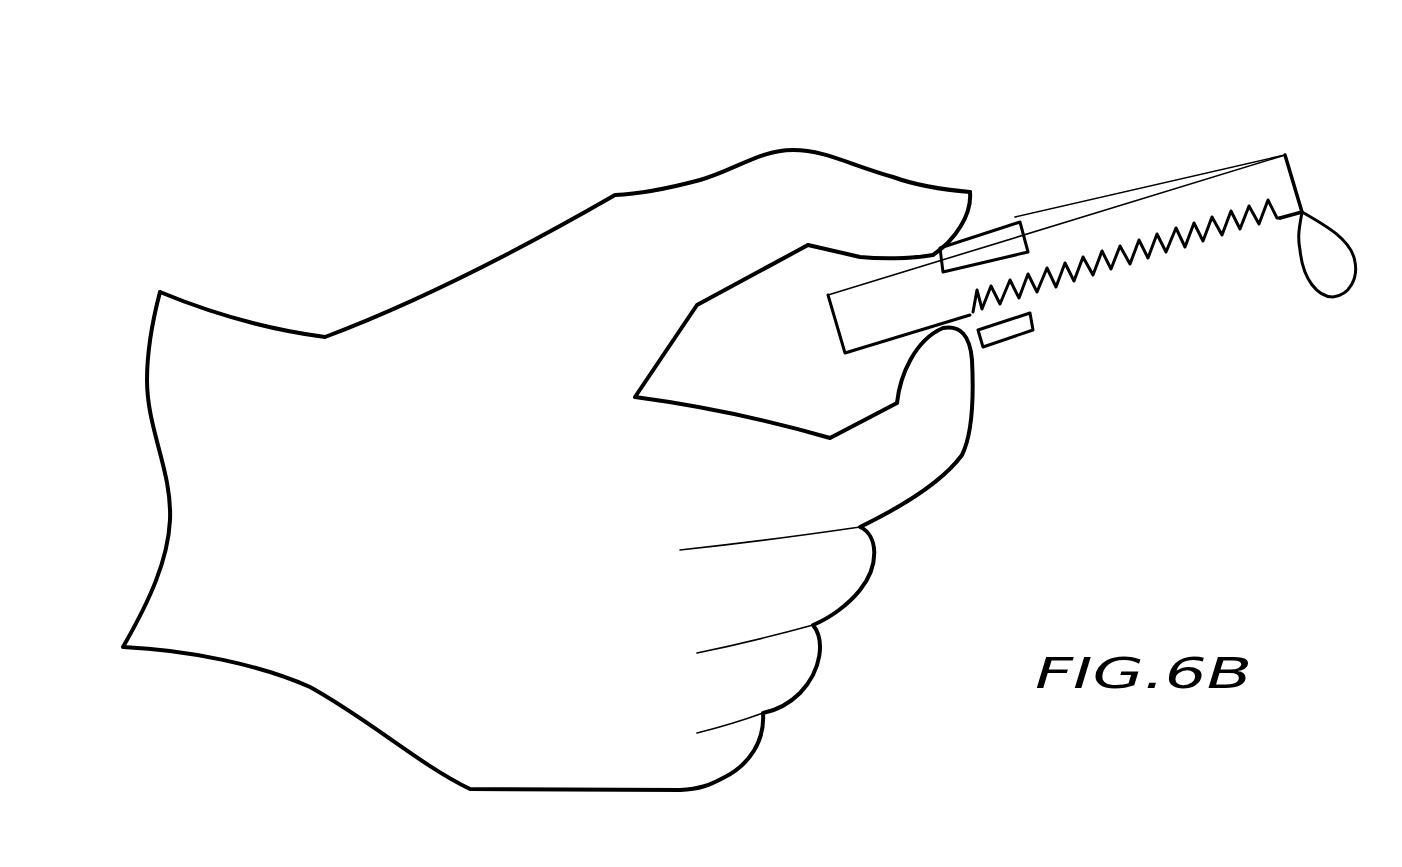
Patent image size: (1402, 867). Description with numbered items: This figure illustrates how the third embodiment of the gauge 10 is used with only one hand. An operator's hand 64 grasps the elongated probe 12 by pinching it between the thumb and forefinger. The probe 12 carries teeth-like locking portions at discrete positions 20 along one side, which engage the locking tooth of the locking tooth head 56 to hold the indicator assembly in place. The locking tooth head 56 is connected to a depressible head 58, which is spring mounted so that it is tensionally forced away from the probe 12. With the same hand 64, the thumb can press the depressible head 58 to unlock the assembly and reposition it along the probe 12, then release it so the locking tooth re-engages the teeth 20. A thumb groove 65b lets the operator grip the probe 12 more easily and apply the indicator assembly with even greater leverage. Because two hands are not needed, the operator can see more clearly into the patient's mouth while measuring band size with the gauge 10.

The gauge 10 is at (1232, 107).
The probe 12 is at (1194, 232).
The teeth-like locking portions 20 is at (1348, 290).
The locking tooth head 56 is at (1017, 337).
The depressible head 58 is at (1020, 226).
The operator's hand 64 is at (688, 177).
The thumb groove 65b is at (945, 250).